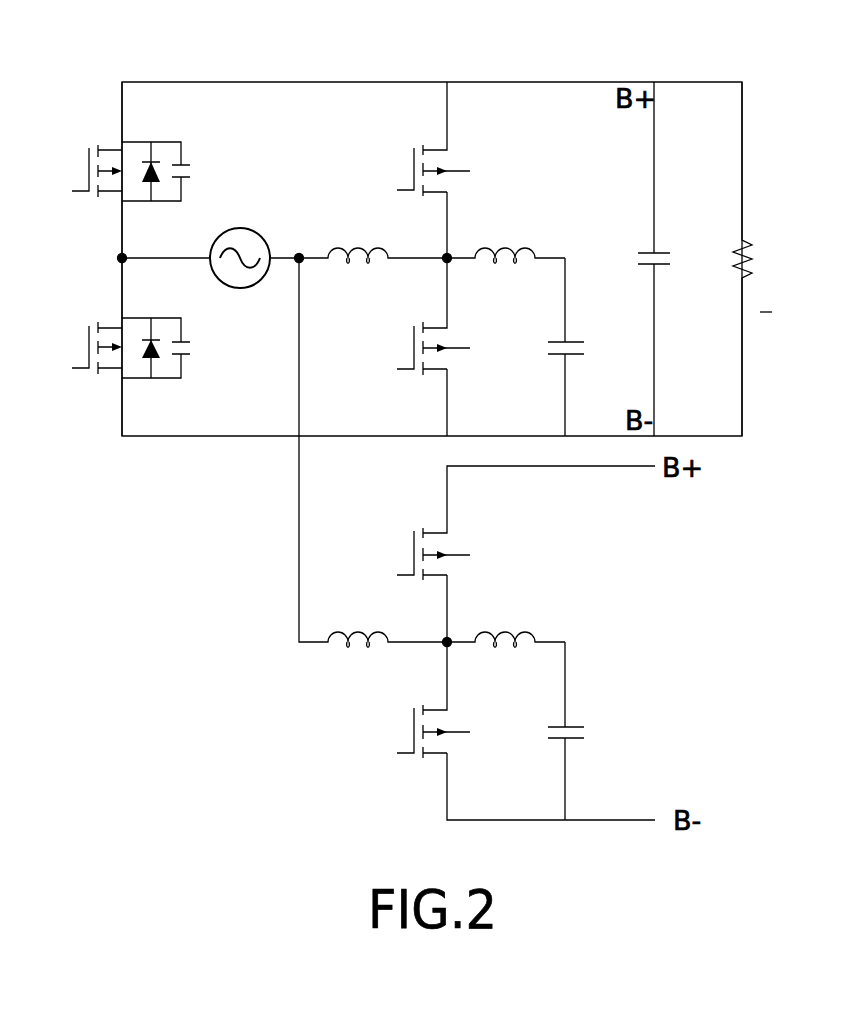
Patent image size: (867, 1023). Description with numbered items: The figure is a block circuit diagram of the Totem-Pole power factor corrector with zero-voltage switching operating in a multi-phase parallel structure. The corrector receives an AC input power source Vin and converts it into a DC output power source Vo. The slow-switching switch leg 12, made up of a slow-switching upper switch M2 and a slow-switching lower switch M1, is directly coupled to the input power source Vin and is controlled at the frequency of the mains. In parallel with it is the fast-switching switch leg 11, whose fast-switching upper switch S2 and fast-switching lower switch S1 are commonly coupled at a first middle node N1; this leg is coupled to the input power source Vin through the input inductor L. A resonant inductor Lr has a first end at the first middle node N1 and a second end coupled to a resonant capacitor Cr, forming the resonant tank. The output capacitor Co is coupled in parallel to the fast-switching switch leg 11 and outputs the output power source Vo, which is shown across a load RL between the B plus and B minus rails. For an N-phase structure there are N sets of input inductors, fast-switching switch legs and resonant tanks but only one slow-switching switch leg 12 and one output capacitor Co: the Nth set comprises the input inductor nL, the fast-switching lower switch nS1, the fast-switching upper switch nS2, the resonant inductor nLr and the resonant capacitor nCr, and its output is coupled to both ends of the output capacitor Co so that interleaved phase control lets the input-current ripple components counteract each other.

The fast-switching switch leg 11 is at (409, 116).
The slow-switching switch leg 12 is at (85, 116).
The slow-switching lower switch M1 is at (117, 348).
The slow-switching upper switch M2 is at (117, 171).
The fast-switching lower switch S1 is at (422, 347).
The fast-switching upper switch S2 is at (422, 170).
The first middle node N1 is at (430, 243).
The input inductor L is at (373, 240).
The resonant inductor Lr is at (506, 240).
The resonant capacitor Cr is at (551, 347).
The output capacitor Co is at (635, 259).
The load resistor RL is at (724, 259).
The input power source Vin is at (210, 240).
The output power source Vo is at (774, 252).
The fast-switching lower switch of the Nth set nS1 is at (508, 731).
The fast-switching upper switch of the Nth set nS2 is at (508, 554).
The Nth set of input inductor nL is at (373, 452).
The resonant inductor of the Nth set nLr is at (506, 623).
The resonant capacitor of the Nth set nCr is at (543, 731).